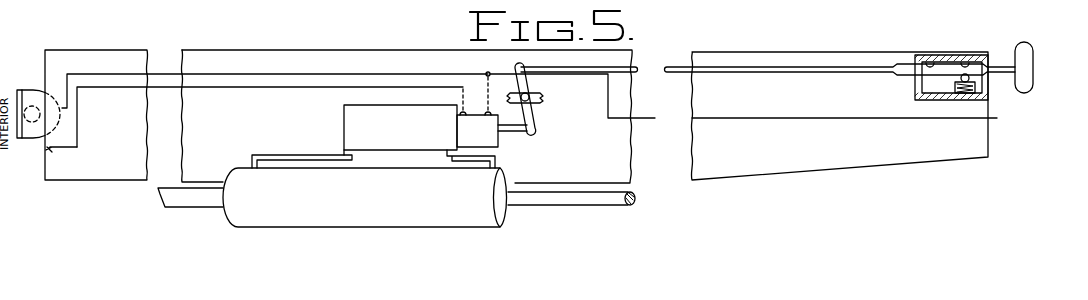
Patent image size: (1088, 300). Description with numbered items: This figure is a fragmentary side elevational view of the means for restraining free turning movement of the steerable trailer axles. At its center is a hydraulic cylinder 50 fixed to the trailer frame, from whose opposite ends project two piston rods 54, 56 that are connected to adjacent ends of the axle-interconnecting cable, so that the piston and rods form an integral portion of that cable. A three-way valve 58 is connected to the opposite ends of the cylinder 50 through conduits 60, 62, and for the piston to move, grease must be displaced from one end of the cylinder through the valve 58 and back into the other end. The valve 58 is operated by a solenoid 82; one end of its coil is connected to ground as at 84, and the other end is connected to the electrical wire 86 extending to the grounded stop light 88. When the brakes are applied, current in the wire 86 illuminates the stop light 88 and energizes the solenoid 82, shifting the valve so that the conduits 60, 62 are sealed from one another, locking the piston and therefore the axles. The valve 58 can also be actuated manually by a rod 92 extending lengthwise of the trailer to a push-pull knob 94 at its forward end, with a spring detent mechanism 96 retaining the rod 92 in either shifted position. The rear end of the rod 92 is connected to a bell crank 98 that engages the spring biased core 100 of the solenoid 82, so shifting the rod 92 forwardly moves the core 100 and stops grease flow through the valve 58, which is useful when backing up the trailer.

The hydraulic cylinder 50 is at (391, 206).
The piston rod 54 is at (208, 197).
The piston rod 56 is at (615, 200).
The three-way valve 58 is at (352, 118).
The conduit 60 is at (308, 157).
The conduit 62 is at (478, 168).
The solenoid 82 is at (477, 129).
The ground 84 is at (45, 152).
The electrical wire 86 is at (103, 89).
The stop light 88 is at (27, 96).
The rod 92 is at (783, 74).
The push-pull knob 94 is at (1023, 45).
The spring detent mechanism 96 is at (915, 85).
The bell crank 98 is at (533, 117).
The spring biased core 100 is at (518, 135).